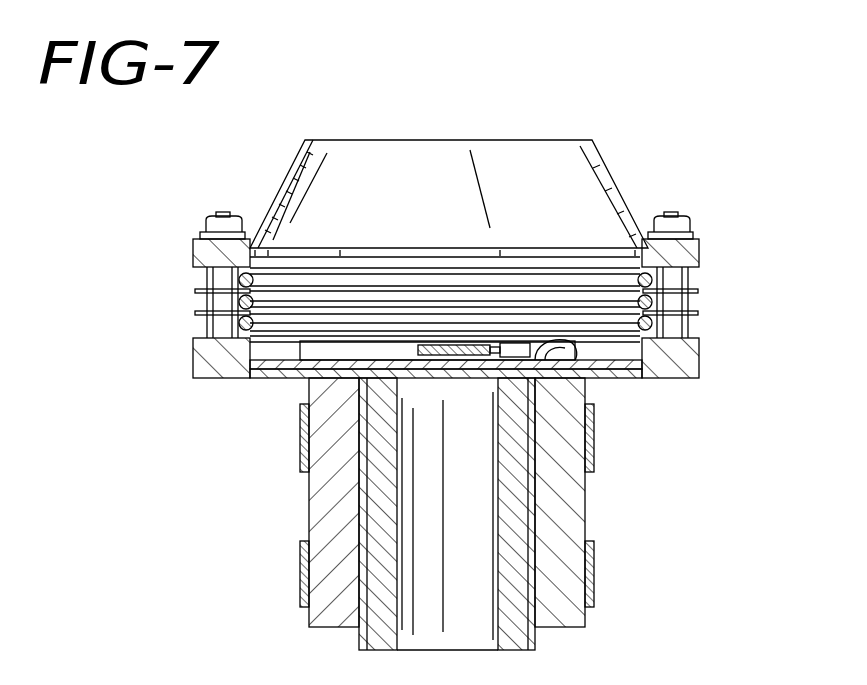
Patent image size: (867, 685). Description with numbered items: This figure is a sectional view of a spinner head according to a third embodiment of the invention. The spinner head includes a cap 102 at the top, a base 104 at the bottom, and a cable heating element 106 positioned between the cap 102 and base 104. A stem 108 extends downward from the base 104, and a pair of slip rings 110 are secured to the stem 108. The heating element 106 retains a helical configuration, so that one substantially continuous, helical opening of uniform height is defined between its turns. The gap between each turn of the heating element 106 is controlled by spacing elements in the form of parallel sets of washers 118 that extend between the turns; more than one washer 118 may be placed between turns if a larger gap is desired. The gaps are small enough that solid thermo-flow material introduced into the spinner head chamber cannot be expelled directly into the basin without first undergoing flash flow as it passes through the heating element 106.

The cap 102 is at (609, 176).
The base 104 is at (193, 352).
The cable heating element 106 is at (268, 300).
The stem 108 is at (585, 620).
The slip rings 110 is at (300, 433).
The washers 118 is at (700, 291).